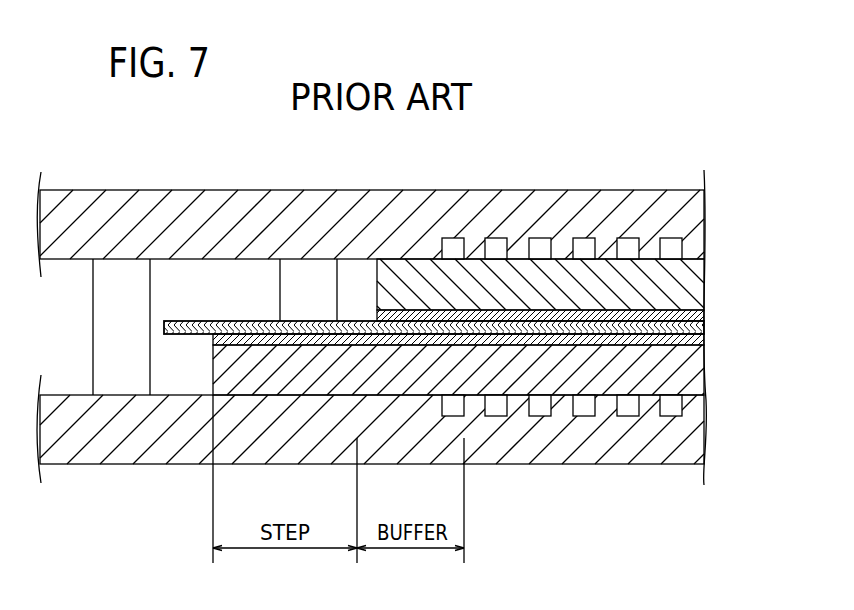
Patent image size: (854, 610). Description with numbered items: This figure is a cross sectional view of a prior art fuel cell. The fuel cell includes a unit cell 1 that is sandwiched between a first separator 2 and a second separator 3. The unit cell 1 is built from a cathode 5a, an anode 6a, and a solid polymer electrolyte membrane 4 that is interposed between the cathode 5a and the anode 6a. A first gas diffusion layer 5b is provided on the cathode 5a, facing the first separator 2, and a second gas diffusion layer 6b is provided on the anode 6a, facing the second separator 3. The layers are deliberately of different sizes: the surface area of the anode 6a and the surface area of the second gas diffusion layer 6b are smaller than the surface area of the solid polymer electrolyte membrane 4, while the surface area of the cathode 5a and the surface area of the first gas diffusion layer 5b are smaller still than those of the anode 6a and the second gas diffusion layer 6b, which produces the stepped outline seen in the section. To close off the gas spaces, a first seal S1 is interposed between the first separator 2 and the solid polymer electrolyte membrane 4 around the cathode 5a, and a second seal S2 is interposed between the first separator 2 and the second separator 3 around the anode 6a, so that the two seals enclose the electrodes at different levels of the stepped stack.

The unit cell 1 is at (480, 267).
The first separator 2 is at (663, 220).
The second separator 3 is at (663, 436).
The solid polymer electrolyte membrane 4 is at (193, 321).
The cathode 5a is at (697, 316).
The first gas diffusion layer 5b is at (672, 284).
The anode 6a is at (697, 341).
The second gas diffusion layer 6b is at (670, 373).
The first seal S1 is at (309, 286).
The second seal S2 is at (108, 337).